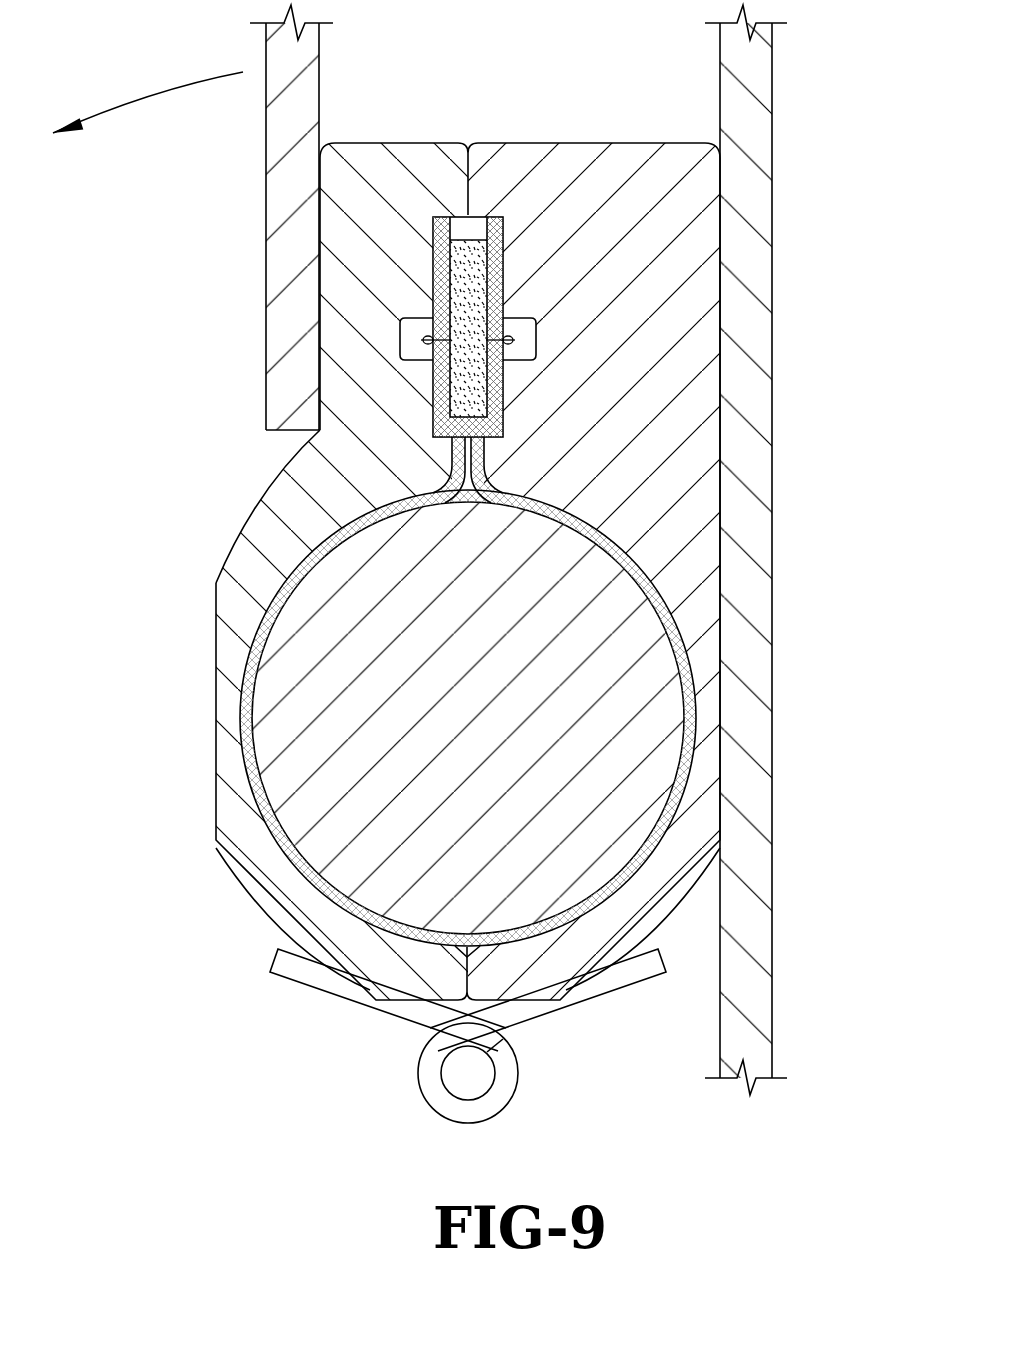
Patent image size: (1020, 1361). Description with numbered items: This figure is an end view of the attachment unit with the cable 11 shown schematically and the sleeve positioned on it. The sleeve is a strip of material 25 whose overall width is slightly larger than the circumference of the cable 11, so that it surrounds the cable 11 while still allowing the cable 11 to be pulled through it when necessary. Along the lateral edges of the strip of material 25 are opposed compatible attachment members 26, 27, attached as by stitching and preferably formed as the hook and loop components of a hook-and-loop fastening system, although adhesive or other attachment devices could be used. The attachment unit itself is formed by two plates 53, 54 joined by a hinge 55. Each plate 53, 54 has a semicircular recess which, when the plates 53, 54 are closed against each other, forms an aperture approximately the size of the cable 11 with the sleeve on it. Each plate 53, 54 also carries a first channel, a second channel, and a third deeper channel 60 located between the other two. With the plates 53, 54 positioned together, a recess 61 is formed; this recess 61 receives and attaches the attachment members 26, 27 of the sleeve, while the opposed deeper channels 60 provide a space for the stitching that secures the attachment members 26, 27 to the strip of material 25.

The cable 11 is at (378, 738).
The strip of material 25 is at (610, 553).
The attachment member 26 is at (460, 278).
The attachment member 27 is at (475, 263).
The plate 53 is at (660, 440).
The plate 54 is at (325, 487).
The hinge 55 is at (435, 1085).
The third deeper channel 60 is at (405, 338).
The recess 61 is at (473, 227).